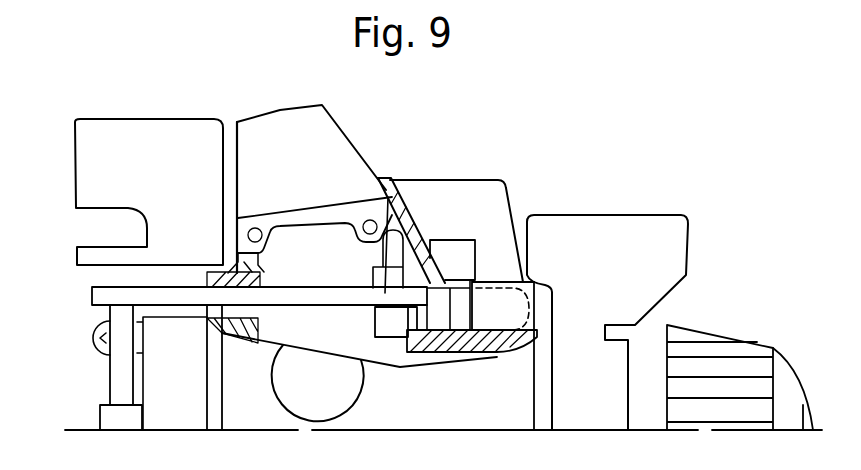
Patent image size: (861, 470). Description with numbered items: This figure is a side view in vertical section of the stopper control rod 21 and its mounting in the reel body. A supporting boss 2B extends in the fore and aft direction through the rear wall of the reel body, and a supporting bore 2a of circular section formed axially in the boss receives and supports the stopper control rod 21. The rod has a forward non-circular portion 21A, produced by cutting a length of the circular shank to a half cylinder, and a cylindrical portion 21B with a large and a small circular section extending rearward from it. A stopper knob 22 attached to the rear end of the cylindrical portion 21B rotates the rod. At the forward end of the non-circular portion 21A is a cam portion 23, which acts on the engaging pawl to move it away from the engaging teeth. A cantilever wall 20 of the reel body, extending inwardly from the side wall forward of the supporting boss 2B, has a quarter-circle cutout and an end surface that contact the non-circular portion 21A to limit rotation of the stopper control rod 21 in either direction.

The cantilever wall 20 is at (392, 337).
The stopper control rod 21 is at (318, 292).
The non-circular portion 21A is at (403, 205).
The cylindrical portion 21B is at (462, 287).
The stopper knob 22 is at (503, 182).
The cam portion 23 is at (92, 297).
The supporting bore 2a is at (377, 317).
The supporting boss 2B is at (456, 355).